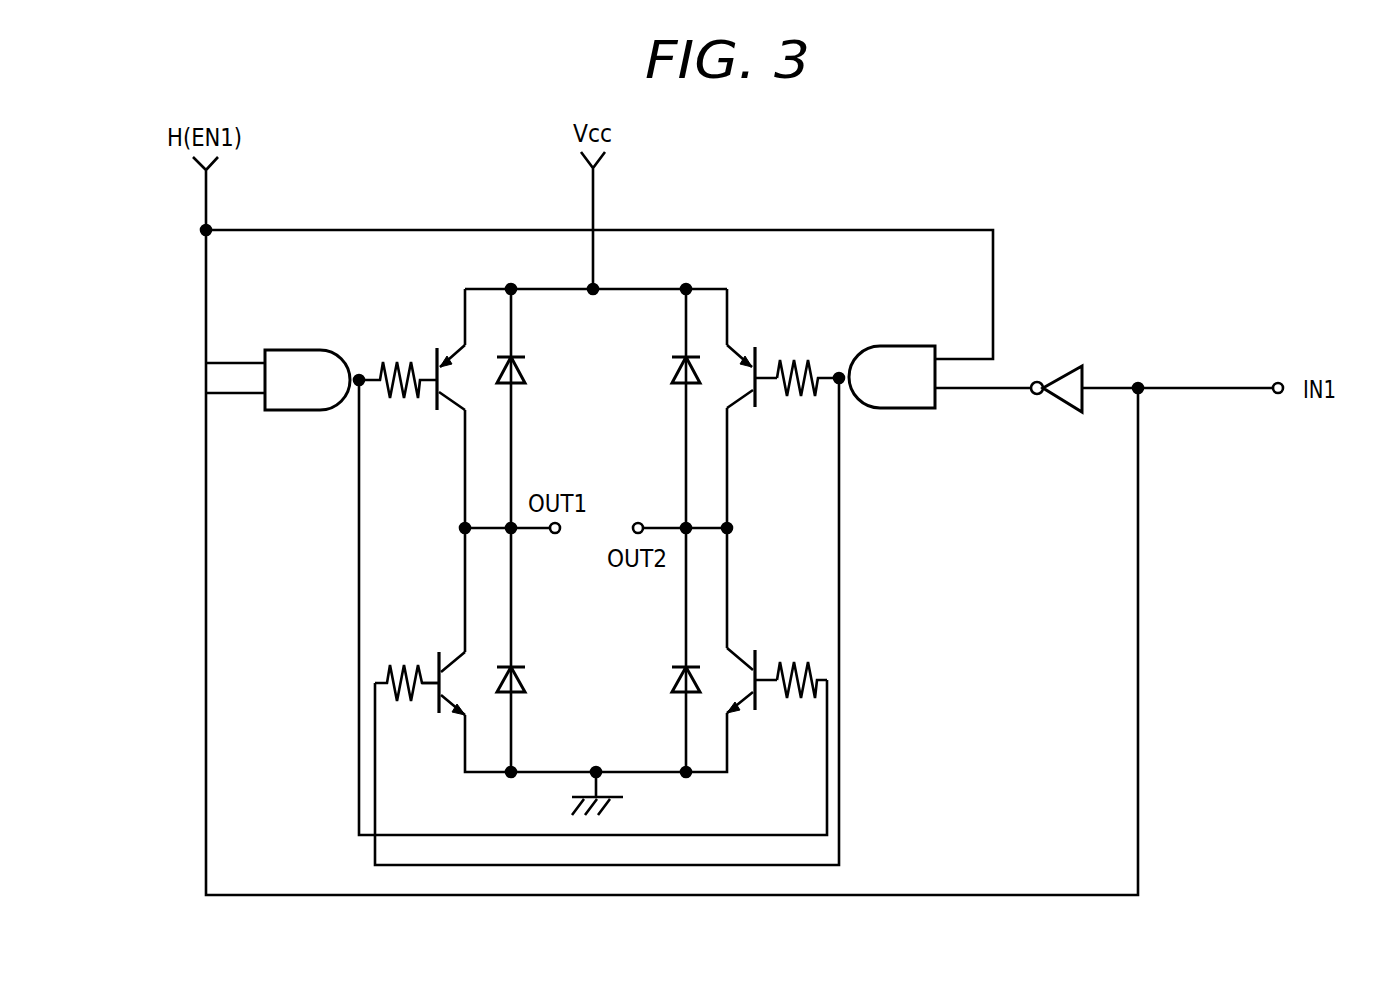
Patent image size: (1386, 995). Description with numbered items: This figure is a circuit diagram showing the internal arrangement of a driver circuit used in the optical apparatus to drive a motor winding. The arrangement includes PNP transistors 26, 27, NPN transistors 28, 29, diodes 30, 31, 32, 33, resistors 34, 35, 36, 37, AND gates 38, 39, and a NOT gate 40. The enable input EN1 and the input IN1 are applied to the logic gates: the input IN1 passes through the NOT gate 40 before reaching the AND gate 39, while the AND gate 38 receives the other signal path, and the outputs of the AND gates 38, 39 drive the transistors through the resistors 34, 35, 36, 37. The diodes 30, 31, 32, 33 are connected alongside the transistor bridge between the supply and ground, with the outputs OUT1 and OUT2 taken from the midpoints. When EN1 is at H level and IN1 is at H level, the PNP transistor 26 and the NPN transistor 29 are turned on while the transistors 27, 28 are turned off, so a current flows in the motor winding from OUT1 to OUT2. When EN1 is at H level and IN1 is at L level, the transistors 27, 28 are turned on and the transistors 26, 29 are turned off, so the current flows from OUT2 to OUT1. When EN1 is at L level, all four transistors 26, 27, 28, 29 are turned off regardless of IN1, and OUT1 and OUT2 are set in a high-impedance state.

The PNP transistor 26 is at (445, 360).
The PNP transistor 27 is at (742, 361).
The NPN transistor 28 is at (437, 666).
The NPN transistor 29 is at (757, 667).
The diode 30 is at (526, 373).
The diode 31 is at (671, 373).
The diode 32 is at (526, 682).
The diode 33 is at (671, 682).
The resistor 34 is at (397, 396).
The resistor 35 is at (797, 395).
The resistor 36 is at (392, 698).
The resistor 37 is at (797, 700).
The AND gate 38 is at (310, 348).
The AND gate 39 is at (897, 345).
The NOT gate 40 is at (1062, 375).